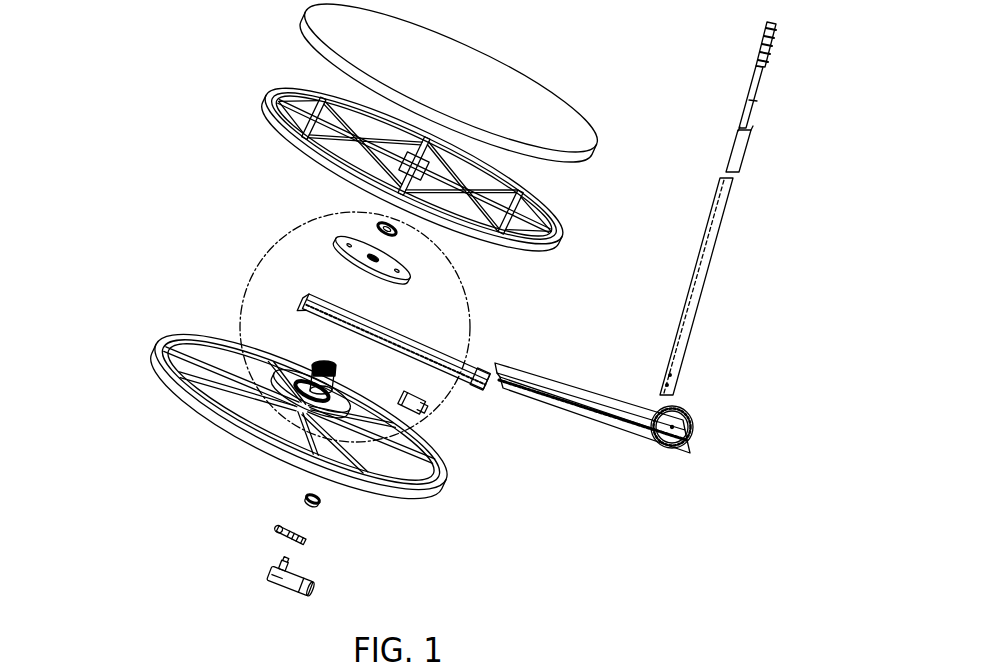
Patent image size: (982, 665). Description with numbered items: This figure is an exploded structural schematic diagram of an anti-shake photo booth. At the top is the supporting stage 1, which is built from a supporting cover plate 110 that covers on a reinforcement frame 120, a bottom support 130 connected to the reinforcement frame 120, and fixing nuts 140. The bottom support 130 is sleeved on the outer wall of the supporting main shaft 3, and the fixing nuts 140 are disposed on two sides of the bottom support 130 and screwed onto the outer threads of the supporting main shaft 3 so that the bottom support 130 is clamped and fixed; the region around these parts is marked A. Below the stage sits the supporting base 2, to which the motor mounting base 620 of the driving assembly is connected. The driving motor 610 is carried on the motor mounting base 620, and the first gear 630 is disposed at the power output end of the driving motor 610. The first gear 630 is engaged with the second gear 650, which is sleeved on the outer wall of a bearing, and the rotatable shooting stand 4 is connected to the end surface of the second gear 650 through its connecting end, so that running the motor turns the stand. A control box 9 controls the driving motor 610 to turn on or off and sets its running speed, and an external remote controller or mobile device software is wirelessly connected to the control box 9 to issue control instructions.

The supporting stage 1 is at (241, 49).
The supporting cover plate 110 is at (332, 62).
The reinforcement frame 120 is at (323, 164).
The bottom support 130 is at (337, 253).
The fixing nuts 140 is at (377, 227).
The supporting base 2 is at (173, 380).
The supporting main shaft 3 is at (440, 462).
The second gear 650 is at (198, 338).
The motor mounting base 620 is at (320, 420).
The first gear 630 is at (322, 512).
The driving motor 610 is at (306, 582).
The control box 9 is at (437, 402).
The rotatable shooting stand 4 is at (627, 441).
The detail region A is at (470, 305).